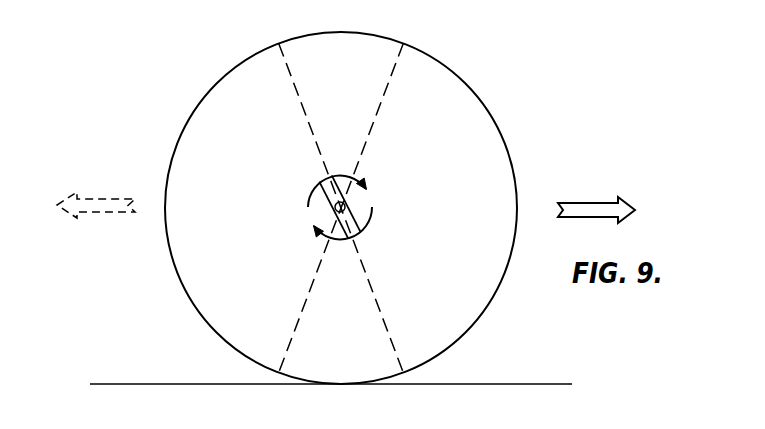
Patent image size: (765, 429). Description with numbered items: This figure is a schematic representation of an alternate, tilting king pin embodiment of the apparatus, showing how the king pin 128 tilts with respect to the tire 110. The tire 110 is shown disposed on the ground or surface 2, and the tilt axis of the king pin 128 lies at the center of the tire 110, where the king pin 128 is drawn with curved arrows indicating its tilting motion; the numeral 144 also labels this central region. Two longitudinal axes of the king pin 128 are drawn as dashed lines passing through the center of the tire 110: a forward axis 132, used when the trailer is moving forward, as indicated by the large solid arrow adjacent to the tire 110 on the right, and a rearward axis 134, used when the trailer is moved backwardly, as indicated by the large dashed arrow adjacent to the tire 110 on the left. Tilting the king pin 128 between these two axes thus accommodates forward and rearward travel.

The tire 110 is at (481, 97).
The ground or surface 2 is at (515, 384).
The king pin 128 is at (340, 205).
The rotational drive 144 is at (345, 203).
The forward axis 132 is at (366, 271).
The rearward axis 134 is at (313, 281).